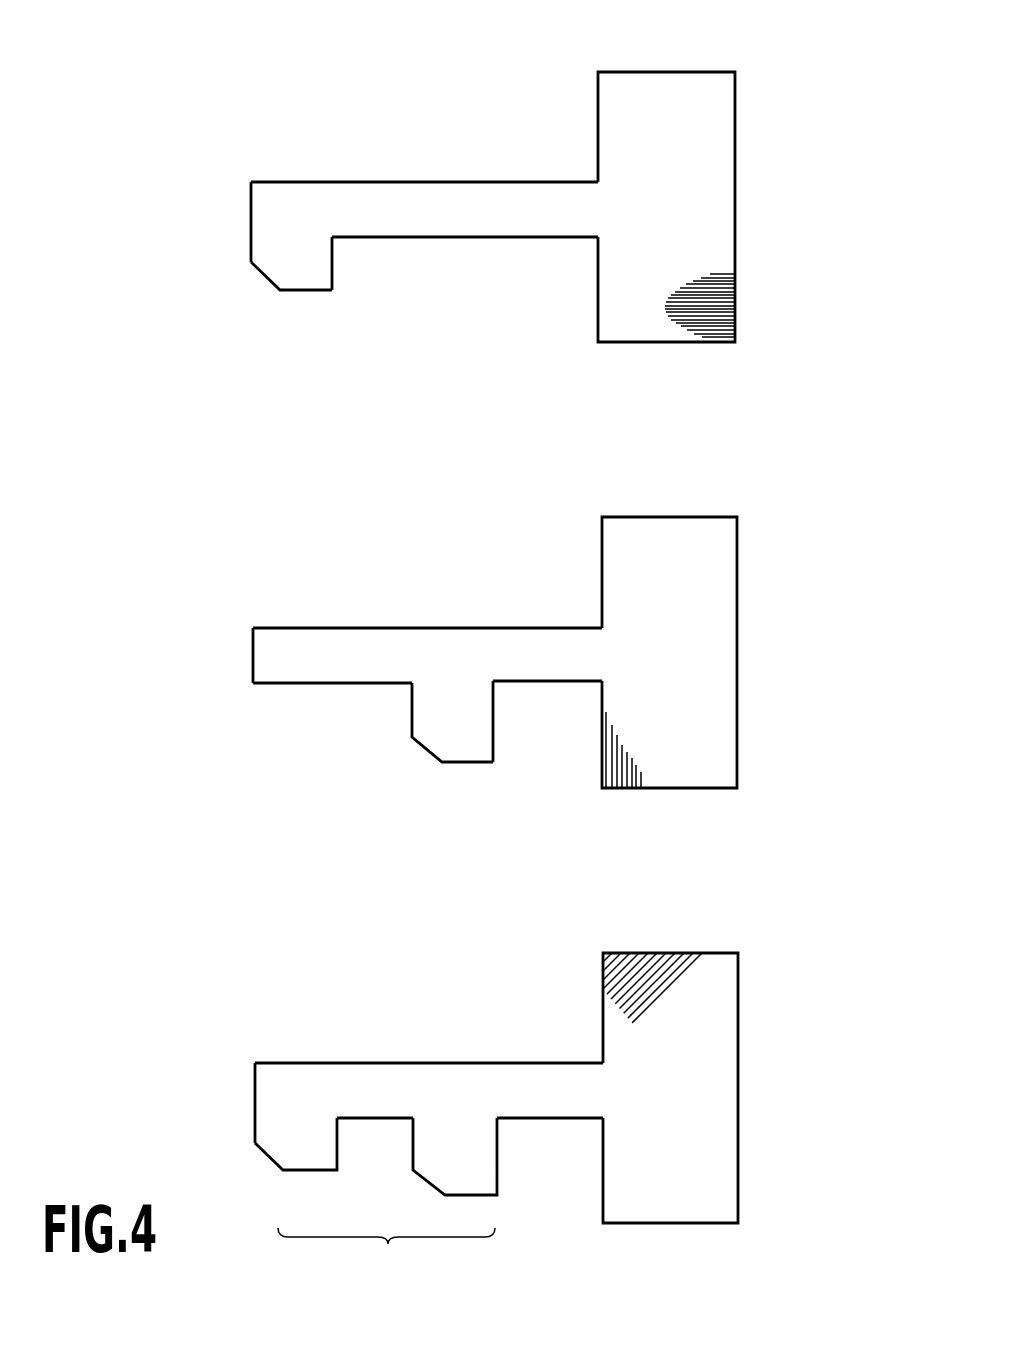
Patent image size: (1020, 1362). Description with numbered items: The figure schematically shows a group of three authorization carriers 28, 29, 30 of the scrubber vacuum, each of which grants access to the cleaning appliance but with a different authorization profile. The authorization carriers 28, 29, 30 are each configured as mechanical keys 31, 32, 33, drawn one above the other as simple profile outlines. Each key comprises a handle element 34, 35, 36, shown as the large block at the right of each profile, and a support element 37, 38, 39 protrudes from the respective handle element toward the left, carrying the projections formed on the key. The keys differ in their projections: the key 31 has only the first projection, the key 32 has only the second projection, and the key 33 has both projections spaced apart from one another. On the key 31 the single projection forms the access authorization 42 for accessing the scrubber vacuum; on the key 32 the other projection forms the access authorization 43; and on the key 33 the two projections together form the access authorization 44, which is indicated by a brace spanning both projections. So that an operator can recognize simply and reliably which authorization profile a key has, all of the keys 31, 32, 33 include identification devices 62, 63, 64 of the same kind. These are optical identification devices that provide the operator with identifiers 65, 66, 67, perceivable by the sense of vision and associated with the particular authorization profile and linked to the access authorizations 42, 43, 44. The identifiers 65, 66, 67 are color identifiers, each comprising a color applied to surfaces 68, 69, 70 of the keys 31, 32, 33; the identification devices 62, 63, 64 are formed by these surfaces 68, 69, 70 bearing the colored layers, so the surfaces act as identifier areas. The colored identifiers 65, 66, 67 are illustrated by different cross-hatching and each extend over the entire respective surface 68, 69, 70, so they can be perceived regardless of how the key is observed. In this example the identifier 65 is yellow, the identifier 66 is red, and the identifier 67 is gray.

The authorization carrier 28 is at (245, 232).
The authorization carrier 29 is at (253, 659).
The authorization carrier 30 is at (255, 1112).
The mechanical key 31 is at (677, 97).
The mechanical key 32 is at (668, 538).
The mechanical key 33 is at (712, 1053).
The handle element 34 is at (691, 171).
The handle element 35 is at (691, 628).
The handle element 36 is at (691, 1188).
The support element 37 is at (452, 200).
The support element 38 is at (360, 645).
The support element 39 is at (480, 1078).
The access authorization 42 is at (322, 268).
The access authorization 43 is at (472, 740).
The access authorization 44 is at (386, 1254).
The identification device 62 is at (706, 303).
The identification device 63 is at (630, 755).
The identification device 64 is at (662, 949).
The identifier 65 is at (728, 343).
The identifier 66 is at (615, 789).
The identifier 67 is at (633, 975).
The surface 68 is at (617, 285).
The surface 69 is at (638, 584).
The surface 70 is at (712, 1143).